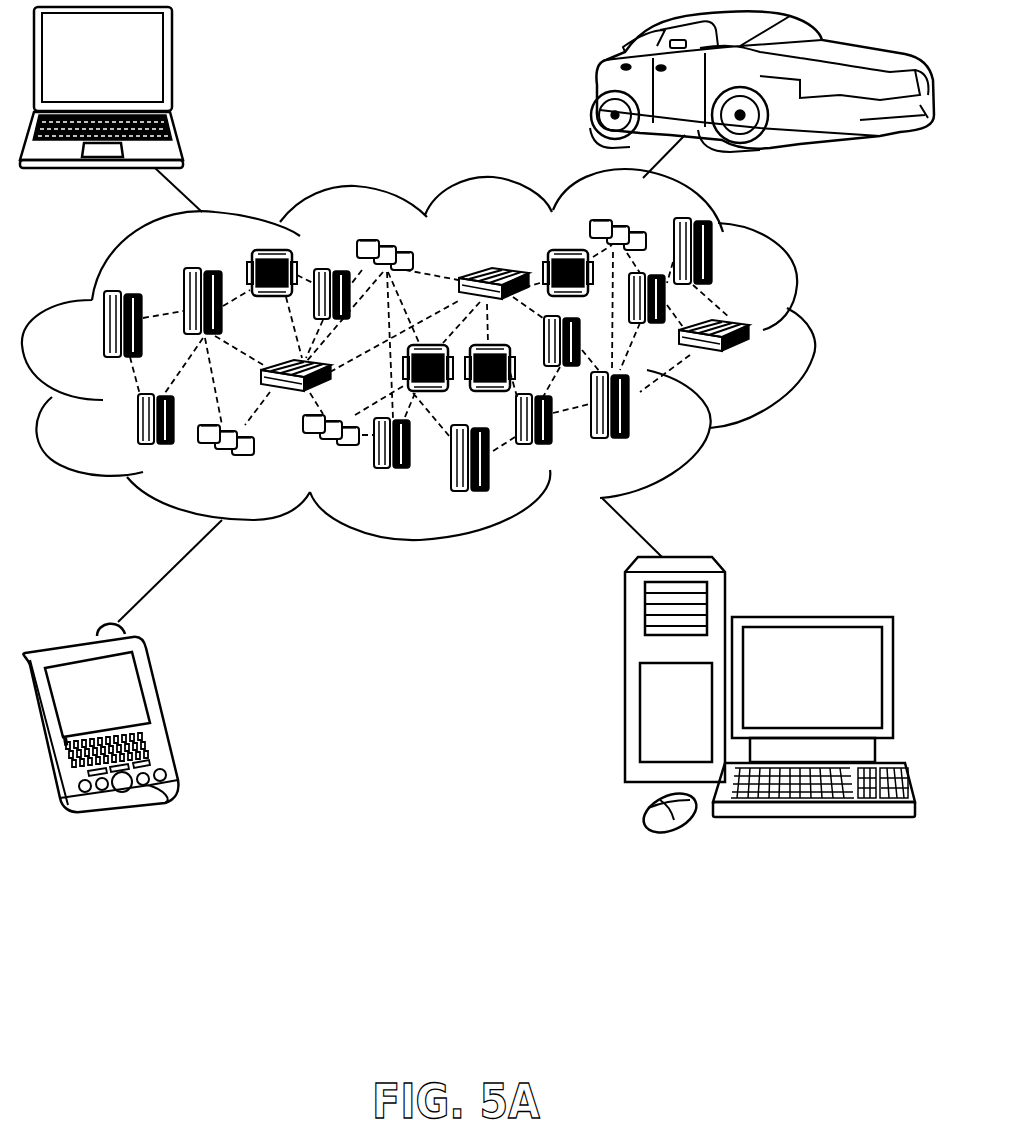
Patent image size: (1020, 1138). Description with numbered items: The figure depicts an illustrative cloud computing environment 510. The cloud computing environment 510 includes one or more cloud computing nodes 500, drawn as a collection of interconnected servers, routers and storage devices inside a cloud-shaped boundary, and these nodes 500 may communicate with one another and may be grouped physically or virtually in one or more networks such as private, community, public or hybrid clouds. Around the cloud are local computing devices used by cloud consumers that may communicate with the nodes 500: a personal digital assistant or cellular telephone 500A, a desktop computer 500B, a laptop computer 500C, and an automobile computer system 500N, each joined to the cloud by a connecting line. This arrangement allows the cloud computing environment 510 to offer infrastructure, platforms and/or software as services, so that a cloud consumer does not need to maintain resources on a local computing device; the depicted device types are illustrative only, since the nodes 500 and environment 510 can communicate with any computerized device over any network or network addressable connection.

The cloud computing nodes 500 is at (758, 364).
The cloud computing environment 510 is at (813, 335).
The personal digital assistant (PDA) or cellular telephone 500A is at (160, 708).
The desktop computer 500B is at (812, 615).
The laptop computer 500C is at (168, 68).
The automobile computer system 500N is at (602, 84).